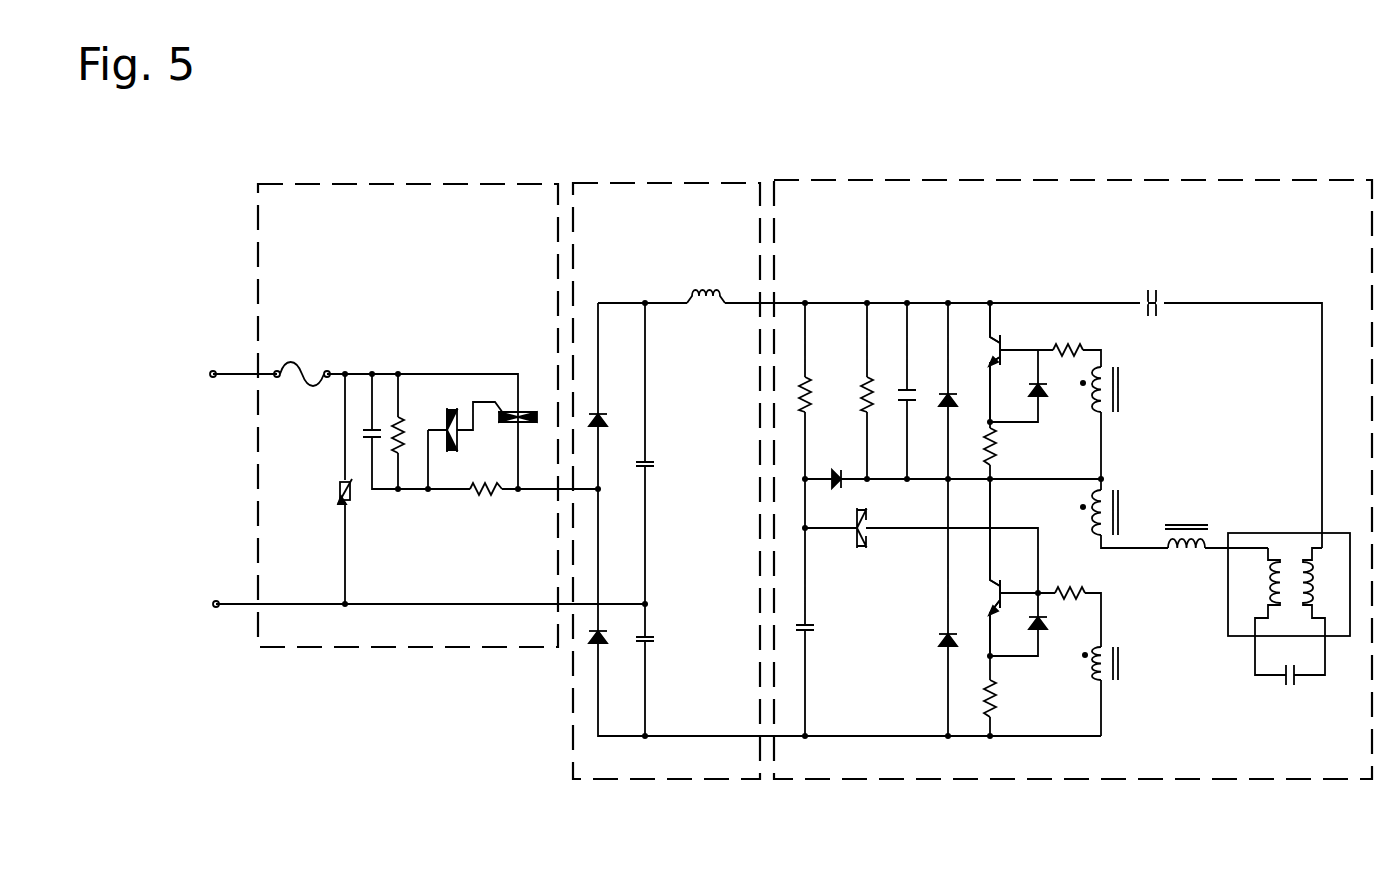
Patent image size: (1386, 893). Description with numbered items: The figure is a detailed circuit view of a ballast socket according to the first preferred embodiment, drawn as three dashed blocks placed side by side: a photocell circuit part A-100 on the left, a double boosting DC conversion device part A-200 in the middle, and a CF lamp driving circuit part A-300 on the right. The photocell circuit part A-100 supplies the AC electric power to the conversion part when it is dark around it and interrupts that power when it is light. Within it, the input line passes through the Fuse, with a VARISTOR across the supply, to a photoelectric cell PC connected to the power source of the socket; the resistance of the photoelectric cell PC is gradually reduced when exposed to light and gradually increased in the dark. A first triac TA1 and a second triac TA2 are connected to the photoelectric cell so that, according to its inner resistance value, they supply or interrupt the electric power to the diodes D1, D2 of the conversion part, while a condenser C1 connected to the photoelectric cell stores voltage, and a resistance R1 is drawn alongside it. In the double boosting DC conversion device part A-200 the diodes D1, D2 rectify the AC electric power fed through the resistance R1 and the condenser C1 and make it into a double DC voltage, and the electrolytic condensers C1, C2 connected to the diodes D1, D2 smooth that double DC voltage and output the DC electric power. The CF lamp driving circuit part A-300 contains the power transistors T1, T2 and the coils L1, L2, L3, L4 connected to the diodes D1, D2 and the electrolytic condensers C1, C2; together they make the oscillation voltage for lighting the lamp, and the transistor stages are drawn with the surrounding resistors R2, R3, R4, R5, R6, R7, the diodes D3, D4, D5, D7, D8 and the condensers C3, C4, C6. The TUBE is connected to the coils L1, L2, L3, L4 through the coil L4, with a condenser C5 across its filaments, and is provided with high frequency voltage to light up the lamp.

The photocell circuit part A-100 is at (423, 648).
The double boosting DC conversion device part A-200 is at (655, 780).
The CF lamp driving circuit part A-300 is at (1045, 780).
The fuse Fuse is at (300, 363).
The varistor VARISTOR is at (340, 482).
The condenser C1 is at (368, 428).
The resistance R1 is at (403, 418).
The first triac TA1 is at (455, 440).
The second triac TA2 is at (529, 406).
The photoelectric cell PC is at (496, 497).
The diode D1 is at (602, 414).
The diode D2 is at (591, 650).
The electrolytic condenser C2 is at (639, 645).
The resistor R2 is at (793, 393).
The resistor R3 is at (854, 393).
The capacitor C3 is at (899, 387).
The diode D3 is at (836, 468).
The capacitor C4 is at (821, 628).
The diode D4 is at (964, 406).
The diode D8 is at (934, 633).
The power transistor T1 is at (983, 362).
The power transistor T2 is at (981, 567).
The resistor R4 is at (979, 446).
The resistor R5 is at (1068, 339).
The resistor R6 is at (1071, 583).
The resistor R7 is at (979, 698).
The diode D5 is at (1047, 401).
The diode D7 is at (1027, 625).
The capacitor C6 is at (1152, 312).
The coil L1 is at (1115, 389).
The coil L2 is at (1116, 508).
The coil L3 is at (1118, 657).
The coil L4 is at (1186, 523).
The tube TUBE is at (1280, 532).
The capacitor C5 is at (1279, 682).